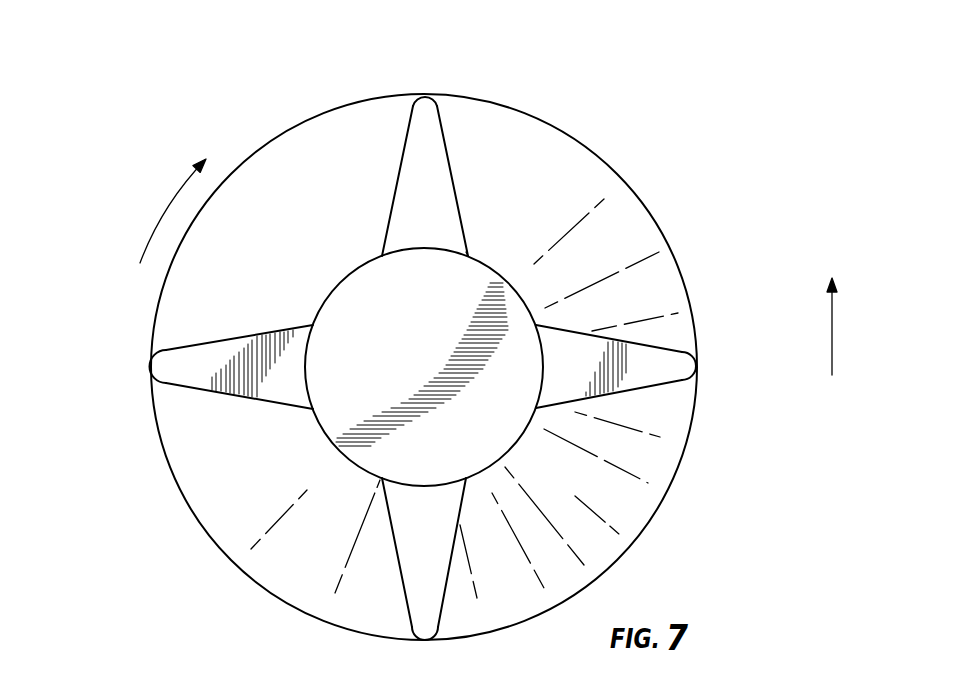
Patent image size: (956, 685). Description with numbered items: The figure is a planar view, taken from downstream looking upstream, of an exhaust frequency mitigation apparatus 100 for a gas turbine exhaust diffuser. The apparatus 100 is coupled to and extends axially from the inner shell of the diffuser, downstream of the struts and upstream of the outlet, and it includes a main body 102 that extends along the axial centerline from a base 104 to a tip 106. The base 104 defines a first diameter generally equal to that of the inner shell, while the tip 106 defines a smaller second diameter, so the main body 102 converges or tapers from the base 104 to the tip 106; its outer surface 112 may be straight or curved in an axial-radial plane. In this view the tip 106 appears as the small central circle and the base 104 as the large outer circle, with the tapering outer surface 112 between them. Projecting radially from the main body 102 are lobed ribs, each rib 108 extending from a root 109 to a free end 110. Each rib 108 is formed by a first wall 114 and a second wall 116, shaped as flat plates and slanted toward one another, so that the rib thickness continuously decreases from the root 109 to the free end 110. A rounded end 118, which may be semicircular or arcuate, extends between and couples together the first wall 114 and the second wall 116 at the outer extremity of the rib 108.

The exhaust frequency mitigation apparatus 100 is at (148, 158).
The main body 102 is at (262, 498).
The base 104 is at (688, 290).
The tip 106 is at (515, 438).
The rib 108 is at (419, 328).
The root 109 is at (470, 257).
The free end 110 is at (422, 93).
The outer surface 112 is at (282, 188).
The first wall 114 is at (455, 188).
The second wall 116 is at (385, 237).
The rounded end 118 is at (150, 363).